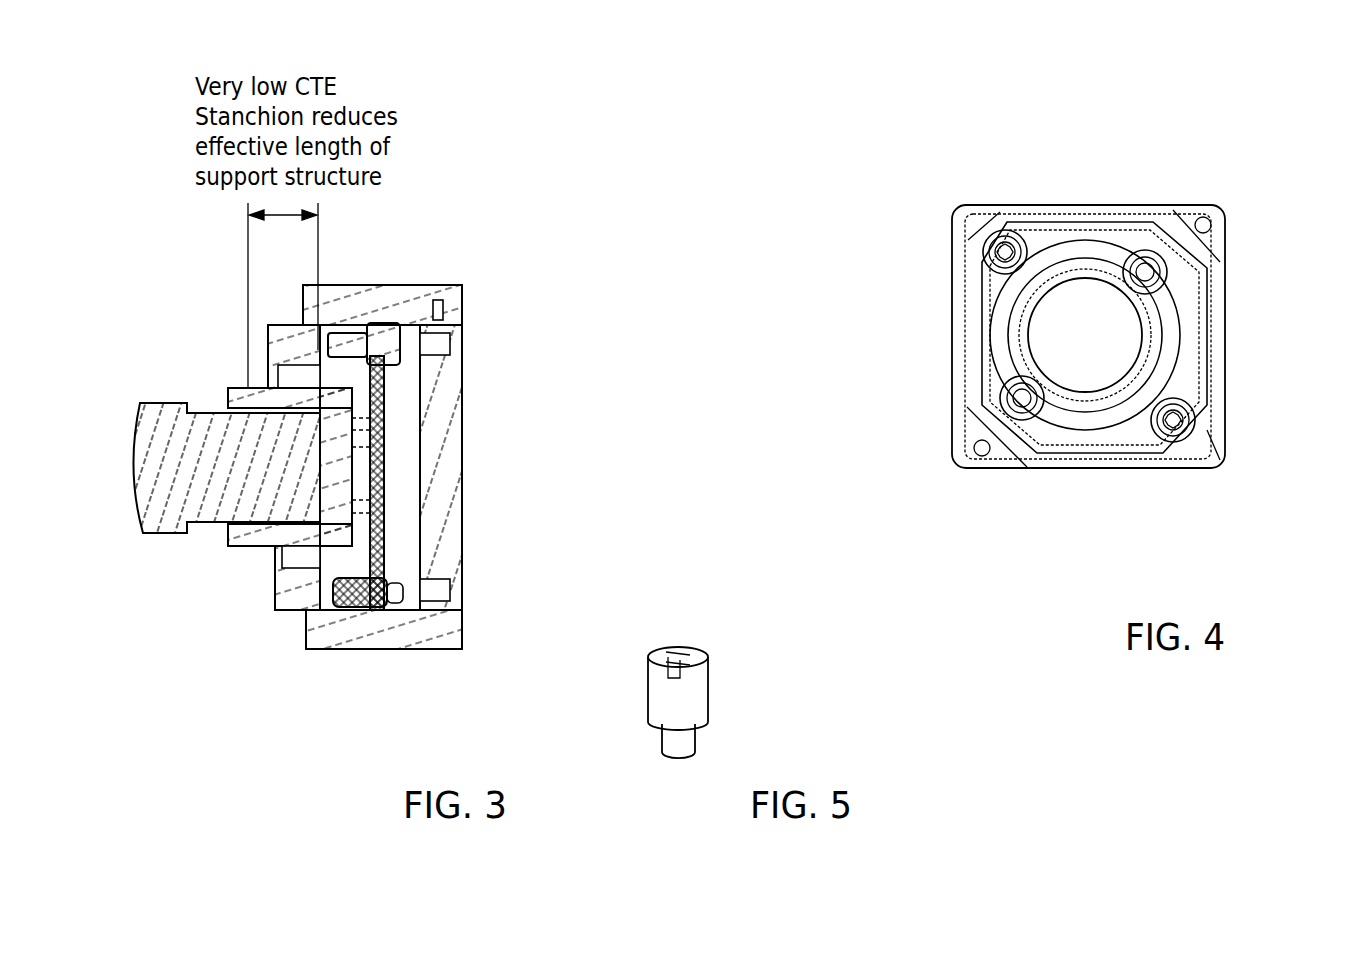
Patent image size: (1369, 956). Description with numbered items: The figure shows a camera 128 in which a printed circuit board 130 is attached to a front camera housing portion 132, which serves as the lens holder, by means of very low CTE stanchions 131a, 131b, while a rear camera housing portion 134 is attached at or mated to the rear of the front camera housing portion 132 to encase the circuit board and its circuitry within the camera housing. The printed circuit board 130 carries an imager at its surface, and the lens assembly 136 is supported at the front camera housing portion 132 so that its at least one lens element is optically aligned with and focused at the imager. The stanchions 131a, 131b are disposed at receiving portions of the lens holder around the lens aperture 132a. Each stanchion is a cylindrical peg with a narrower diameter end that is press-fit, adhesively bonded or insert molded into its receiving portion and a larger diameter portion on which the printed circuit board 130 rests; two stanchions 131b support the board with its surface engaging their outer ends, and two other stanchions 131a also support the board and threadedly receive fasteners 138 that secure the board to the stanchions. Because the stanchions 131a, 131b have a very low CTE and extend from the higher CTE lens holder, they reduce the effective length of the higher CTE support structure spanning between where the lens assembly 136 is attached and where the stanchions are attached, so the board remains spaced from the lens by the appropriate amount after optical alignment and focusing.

In FIG. 3, the camera 128 is at (160, 350).
In FIG. 3, the printed circuit board 130 is at (375, 533).
In FIG. 3, the stanchion 131a is at (329, 327).
In FIG. 4, the stanchion 131a is at (982, 268).
In FIG. 5, the stanchion 131a is at (749, 677).
In FIG. 4, the stanchion 131b is at (1032, 383).
In FIG. 5, the stanchion 131b is at (725, 672).
In FIG. 3, the front camera housing portion 132 is at (283, 592).
In FIG. 4, the front camera housing portion 132 is at (958, 330).
In FIG. 3, the lens aperture 132a is at (330, 456).
In FIG. 3, the rear camera housing portion 134 is at (443, 372).
In FIG. 3, the lens assembly 136 is at (173, 500).
In FIG. 4, the lens assembly 136 is at (1105, 335).
In FIG. 3, the fastener 138 is at (352, 592).
In FIG. 4, the fastener 138 is at (1003, 255).